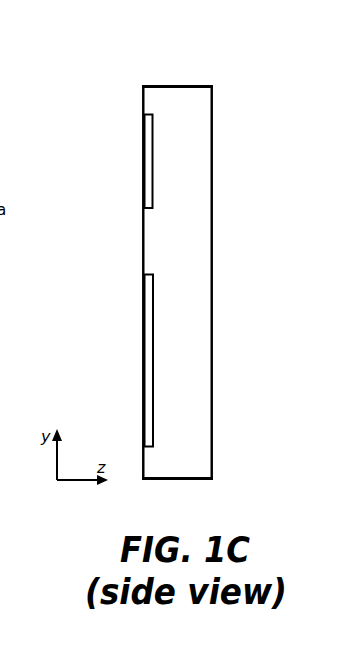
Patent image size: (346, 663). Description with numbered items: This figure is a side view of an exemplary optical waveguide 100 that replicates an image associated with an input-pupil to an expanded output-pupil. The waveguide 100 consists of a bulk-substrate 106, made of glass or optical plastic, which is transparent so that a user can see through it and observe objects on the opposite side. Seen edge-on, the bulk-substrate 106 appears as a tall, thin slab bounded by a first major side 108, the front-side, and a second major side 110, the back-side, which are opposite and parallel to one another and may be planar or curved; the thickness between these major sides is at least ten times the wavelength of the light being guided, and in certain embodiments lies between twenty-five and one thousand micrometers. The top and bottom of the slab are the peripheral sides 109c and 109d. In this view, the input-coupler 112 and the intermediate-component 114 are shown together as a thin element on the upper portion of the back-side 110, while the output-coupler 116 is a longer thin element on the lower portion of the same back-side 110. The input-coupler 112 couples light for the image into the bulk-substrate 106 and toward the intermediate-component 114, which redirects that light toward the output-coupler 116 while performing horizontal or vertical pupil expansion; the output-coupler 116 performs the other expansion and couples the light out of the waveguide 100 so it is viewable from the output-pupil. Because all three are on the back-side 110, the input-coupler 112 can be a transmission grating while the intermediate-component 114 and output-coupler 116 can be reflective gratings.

The optical waveguide 100 is at (167, 283).
The bulk-substrate 106 is at (150, 283).
The first major side 108 is at (214, 108).
The peripheral side 109c is at (178, 86).
The peripheral side 109d is at (183, 480).
The second major side 110 is at (139, 94).
The input-coupler 112 is at (81, 162).
The intermediate-component 114 is at (144, 165).
The output-coupler 116 is at (142, 359).